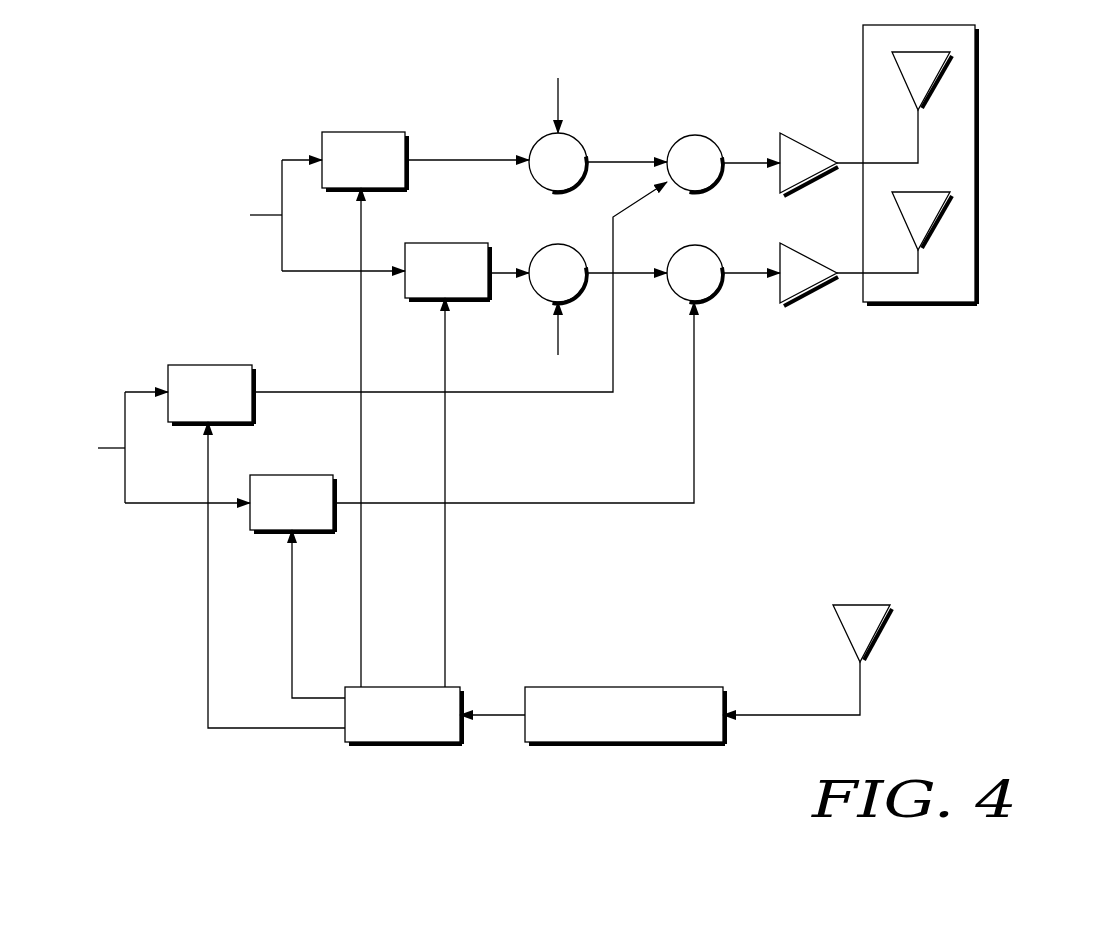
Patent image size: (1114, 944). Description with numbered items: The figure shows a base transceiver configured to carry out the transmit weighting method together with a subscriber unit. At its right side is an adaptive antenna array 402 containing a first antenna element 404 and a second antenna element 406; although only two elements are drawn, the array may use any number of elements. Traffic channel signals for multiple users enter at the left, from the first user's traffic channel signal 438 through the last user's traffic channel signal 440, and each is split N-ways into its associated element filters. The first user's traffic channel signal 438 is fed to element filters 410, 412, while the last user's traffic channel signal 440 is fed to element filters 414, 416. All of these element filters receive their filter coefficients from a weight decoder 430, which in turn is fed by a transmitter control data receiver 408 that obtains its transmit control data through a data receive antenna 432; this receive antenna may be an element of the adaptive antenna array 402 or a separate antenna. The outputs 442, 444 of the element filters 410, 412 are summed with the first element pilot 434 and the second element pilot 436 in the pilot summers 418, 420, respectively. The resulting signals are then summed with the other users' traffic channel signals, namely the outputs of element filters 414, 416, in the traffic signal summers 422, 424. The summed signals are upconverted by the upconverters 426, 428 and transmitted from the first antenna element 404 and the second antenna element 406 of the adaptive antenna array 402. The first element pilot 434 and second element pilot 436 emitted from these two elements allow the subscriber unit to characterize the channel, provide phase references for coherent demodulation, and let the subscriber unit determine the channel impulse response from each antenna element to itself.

The antenna array 402 is at (929, 152).
The first antenna element 404 is at (948, 53).
The second antenna element 406 is at (948, 195).
The transmitter control data receiver 408 is at (553, 687).
The element filter 410 is at (322, 132).
The element filter 412 is at (405, 243).
The element filter 414 is at (168, 365).
The element filter 416 is at (250, 475).
The pilot summer 418 is at (575, 140).
The pilot summer 420 is at (563, 246).
The traffic signal summer 422 is at (718, 140).
The traffic signal summer 424 is at (697, 246).
The upconverter 426 is at (787, 135).
The upconverter 428 is at (780, 248).
The weight decoder 430 is at (455, 687).
The data receive antenna 432 is at (833, 605).
The first element pilot P1 434 is at (543, 50).
The second element pilot P2 436 is at (535, 368).
The traffic channel signal Tch1 438 is at (220, 232).
The traffic channel signal TCHU 440 is at (63, 430).
The element filter output 442 is at (432, 158).
The element filter output 444 is at (497, 268).